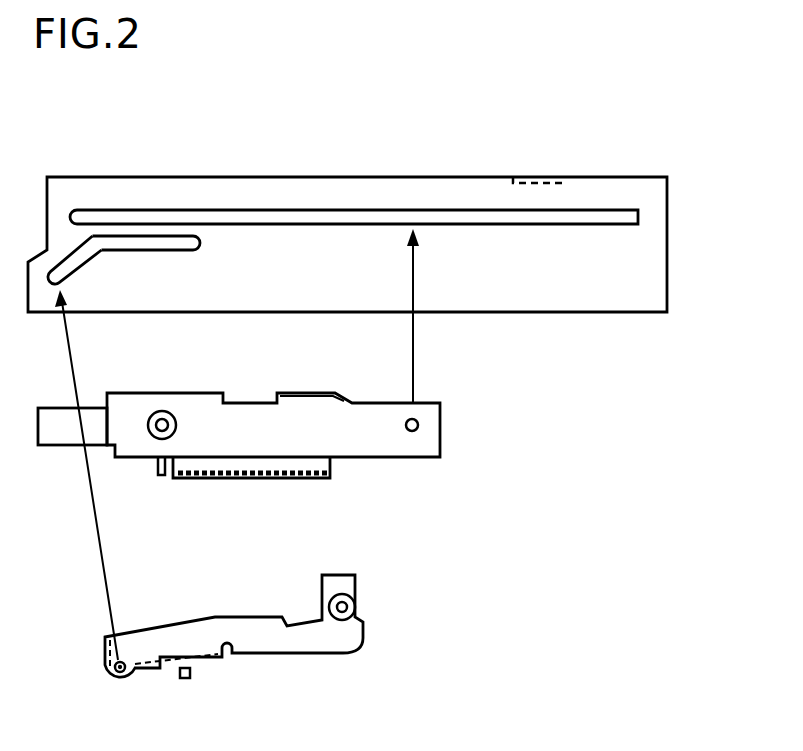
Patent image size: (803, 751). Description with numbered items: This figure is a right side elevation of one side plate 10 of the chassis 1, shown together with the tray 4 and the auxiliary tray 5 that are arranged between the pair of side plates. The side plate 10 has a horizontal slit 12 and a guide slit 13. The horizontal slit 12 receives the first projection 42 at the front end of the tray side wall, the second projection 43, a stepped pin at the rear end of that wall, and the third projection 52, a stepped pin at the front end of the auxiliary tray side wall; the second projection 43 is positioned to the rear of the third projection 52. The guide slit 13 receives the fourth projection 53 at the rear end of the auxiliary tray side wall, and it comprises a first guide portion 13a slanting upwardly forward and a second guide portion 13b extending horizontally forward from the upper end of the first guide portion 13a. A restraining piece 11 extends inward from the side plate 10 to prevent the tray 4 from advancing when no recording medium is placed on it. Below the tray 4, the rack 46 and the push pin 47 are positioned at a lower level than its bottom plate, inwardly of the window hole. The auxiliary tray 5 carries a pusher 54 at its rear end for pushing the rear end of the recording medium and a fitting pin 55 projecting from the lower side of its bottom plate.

The chassis 1 is at (678, 267).
The side plate 10 is at (650, 247).
The restraining piece 11 is at (538, 175).
The horizontal slit 12 is at (347, 223).
The guide slit 13 is at (148, 181).
The first guide portion 13a is at (82, 262).
The second guide portion 13b is at (148, 247).
The tray 4 is at (284, 453).
The first projection 42 is at (420, 425).
The second projection 43 is at (168, 418).
The rack 46 is at (272, 478).
The push pin 47 is at (160, 470).
The auxiliary tray 5 is at (231, 660).
The third projection 52 is at (350, 607).
The fourth projection 53 is at (120, 683).
The pusher 54 is at (105, 657).
The fitting pin 55 is at (187, 678).